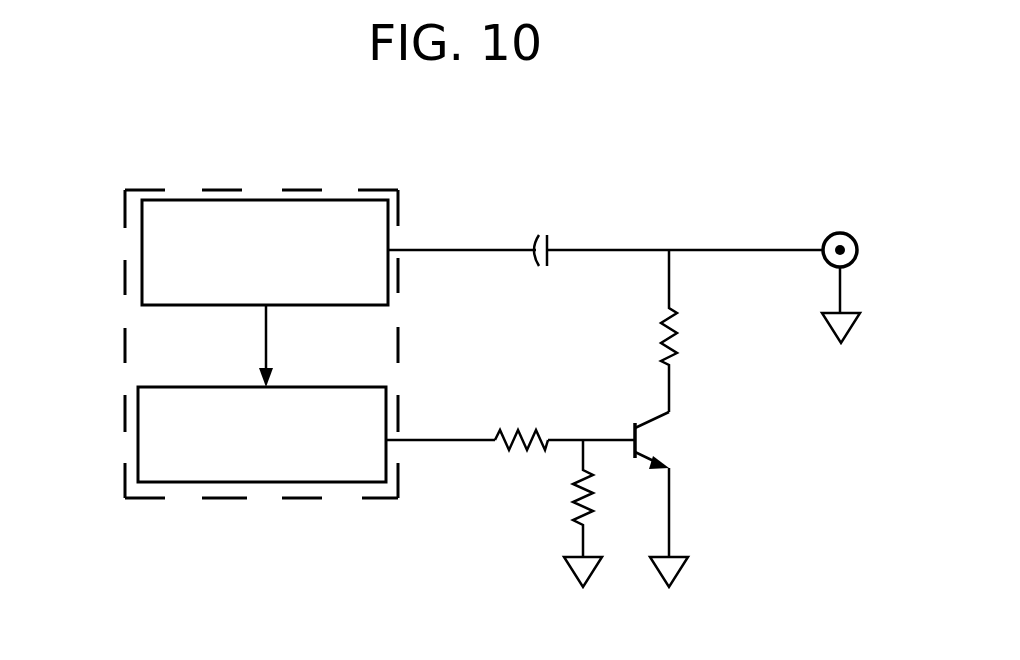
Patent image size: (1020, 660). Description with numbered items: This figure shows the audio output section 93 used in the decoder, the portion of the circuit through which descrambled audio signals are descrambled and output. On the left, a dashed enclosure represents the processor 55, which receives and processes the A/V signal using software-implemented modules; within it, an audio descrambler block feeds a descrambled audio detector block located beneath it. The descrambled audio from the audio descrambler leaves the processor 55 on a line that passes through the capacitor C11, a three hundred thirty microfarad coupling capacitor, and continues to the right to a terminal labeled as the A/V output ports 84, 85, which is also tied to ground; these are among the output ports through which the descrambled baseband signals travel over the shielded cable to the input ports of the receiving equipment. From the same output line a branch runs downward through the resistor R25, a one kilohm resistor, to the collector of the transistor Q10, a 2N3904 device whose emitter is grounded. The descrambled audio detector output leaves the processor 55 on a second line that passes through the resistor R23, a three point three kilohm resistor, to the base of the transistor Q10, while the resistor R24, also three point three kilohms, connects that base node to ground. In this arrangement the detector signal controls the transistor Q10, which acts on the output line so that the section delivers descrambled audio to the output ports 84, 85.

The processor 55 is at (125, 337).
The audio output section 93 is at (491, 178).
The A/V output port 84 is at (895, 212).
The A/V output port 85 is at (840, 250).
The capacitor C11 is at (538, 237).
The resistor R25 is at (699, 331).
The resistor R23 is at (521, 425).
The resistor R24 is at (562, 513).
The transistor Q10 is at (677, 499).